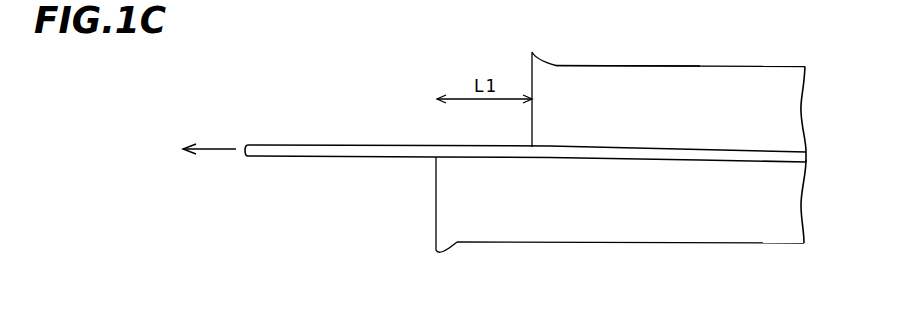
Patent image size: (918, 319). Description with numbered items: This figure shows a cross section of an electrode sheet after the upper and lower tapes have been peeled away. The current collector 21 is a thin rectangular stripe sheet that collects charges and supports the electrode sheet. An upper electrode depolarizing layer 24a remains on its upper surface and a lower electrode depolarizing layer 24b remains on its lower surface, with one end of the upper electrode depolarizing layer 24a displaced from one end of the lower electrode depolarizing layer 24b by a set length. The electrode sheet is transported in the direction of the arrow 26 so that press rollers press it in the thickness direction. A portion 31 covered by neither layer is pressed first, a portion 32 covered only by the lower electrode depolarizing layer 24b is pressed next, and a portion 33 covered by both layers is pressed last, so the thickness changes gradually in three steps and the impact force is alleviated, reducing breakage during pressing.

The current collector 21 is at (553, 185).
The upper electrode depolarizing layer 24a is at (703, 76).
The lower electrode depolarizing layer 24b is at (655, 233).
The arrow 26 is at (213, 150).
The portion of the electrode sheet not covered with both layers 31 is at (305, 160).
The portion covered only with the lower electrode depolarizing mix layer 32 is at (493, 246).
The portion covered with both electrode depolarizing mix layers 33 is at (580, 62).